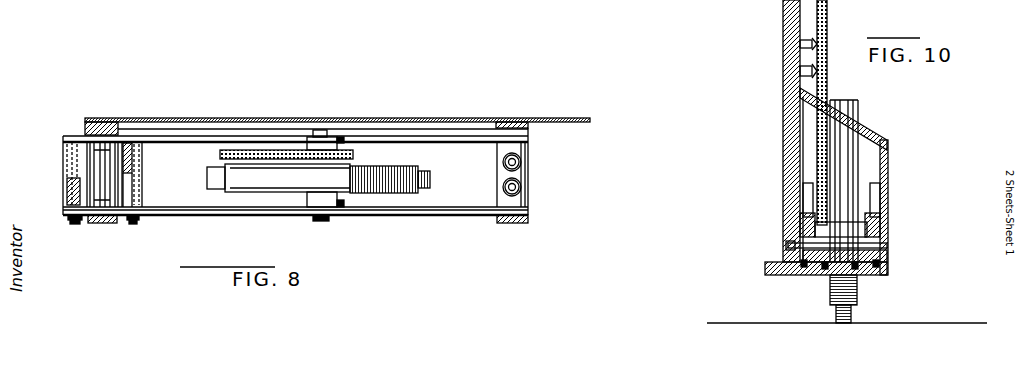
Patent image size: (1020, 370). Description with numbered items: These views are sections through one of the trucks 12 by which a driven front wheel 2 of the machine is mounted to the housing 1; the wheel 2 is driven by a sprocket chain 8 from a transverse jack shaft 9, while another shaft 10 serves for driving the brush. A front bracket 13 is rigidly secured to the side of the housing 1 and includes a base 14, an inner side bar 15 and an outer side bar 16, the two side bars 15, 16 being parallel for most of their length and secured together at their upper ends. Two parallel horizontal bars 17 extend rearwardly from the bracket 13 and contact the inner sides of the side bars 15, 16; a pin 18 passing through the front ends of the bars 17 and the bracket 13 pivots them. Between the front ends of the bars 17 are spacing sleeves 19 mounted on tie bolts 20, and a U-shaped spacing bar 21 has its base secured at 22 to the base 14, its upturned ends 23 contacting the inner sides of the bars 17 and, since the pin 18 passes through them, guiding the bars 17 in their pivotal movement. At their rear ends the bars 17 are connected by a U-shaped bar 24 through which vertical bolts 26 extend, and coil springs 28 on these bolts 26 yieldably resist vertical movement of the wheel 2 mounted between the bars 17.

In FIG. 8, the housing 1 is at (430, 118).
In FIG. 8, the front wheel 2 is at (262, 188).
In FIG. 10, the front wheel 2 is at (845, 145).
In FIG. 8, the sprocket chain 8 is at (250, 148).
In FIG. 10, the sprocket chain 8 is at (828, 20).
In FIG. 8, the jack shaft 9 is at (509, 11).
In FIG. 8, the shaft 10 is at (97, 7).
In FIG. 8, the truck 12 is at (58, 142).
In FIG. 10, the truck 12 is at (892, 272).
In FIG. 10, the front bracket 13 is at (893, 167).
In FIG. 8, the base 14 is at (126, 192).
In FIG. 10, the base 14 is at (792, 275).
In FIG. 8, the inner side bar 15 is at (92, 124).
In FIG. 10, the inner side bar 15 is at (785, 112).
In FIG. 8, the outer side bar 16 is at (514, 223).
In FIG. 10, the outer side bar 16 is at (886, 146).
In FIG. 8, the horizontal bar 17 is at (470, 143).
In FIG. 10, the horizontal bar 17 is at (788, 215).
In FIG. 8, the pin 18 is at (102, 205).
In FIG. 10, the pin 18 is at (788, 246).
In FIG. 8, the spacing sleeve 19 is at (68, 170).
In FIG. 10, the spacing sleeve 19 is at (850, 228).
In FIG. 8, the tie bolt 20 is at (130, 150).
In FIG. 8, the U-shaped spacing bar 21 is at (72, 190).
In FIG. 10, the U-shaped spacing bar 21 is at (864, 275).
In FIG. 10, the securing point 22 is at (826, 275).
In FIG. 8, the upturned end 23 is at (104, 128).
In FIG. 10, the upturned end 23 is at (806, 196).
In FIG. 8, the U-shaped bar 24 is at (528, 195).
In FIG. 8, the vertical bolt 26 is at (520, 185).
In FIG. 8, the coil spring 28 is at (518, 160).